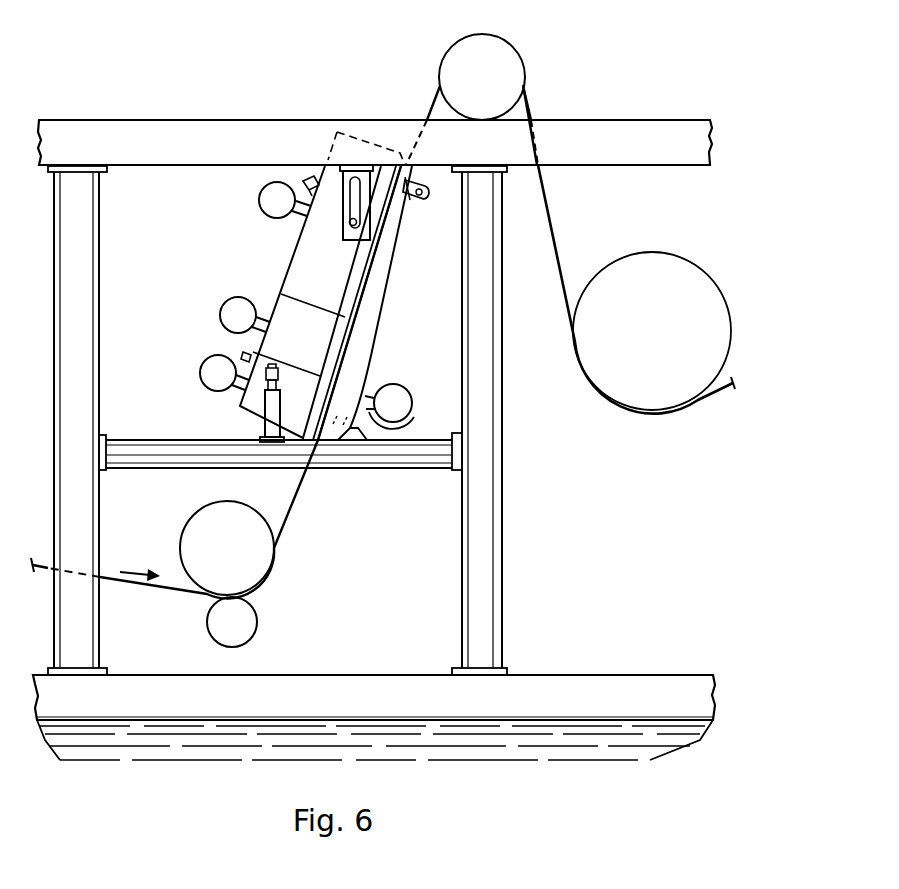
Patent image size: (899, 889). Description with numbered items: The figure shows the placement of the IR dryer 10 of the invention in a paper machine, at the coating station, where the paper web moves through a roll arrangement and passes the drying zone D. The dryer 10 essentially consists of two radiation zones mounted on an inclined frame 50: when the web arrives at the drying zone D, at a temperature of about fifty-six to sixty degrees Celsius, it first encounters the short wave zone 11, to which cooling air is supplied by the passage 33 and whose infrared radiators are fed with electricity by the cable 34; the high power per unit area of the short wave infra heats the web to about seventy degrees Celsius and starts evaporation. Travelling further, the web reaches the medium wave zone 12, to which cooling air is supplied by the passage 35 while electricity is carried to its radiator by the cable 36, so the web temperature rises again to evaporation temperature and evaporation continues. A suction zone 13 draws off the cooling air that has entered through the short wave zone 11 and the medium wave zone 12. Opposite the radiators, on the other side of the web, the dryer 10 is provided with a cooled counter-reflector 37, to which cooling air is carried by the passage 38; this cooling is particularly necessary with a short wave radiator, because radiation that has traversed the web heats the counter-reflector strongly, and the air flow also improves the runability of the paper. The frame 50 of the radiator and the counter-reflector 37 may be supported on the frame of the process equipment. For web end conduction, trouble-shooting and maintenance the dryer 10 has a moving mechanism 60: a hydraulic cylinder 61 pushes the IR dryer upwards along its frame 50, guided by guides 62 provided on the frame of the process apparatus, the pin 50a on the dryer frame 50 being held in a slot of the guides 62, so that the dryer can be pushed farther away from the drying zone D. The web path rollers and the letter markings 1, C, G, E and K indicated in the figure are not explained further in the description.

The IR dryer 10 is at (224, 224).
The cable 36 is at (303, 138).
The passage 35 is at (268, 188).
The cable 34 is at (243, 357).
The passage 33 is at (200, 372).
The passage 38 is at (400, 390).
The frame 50 is at (380, 173).
The pin 50a is at (357, 222).
The short wave zone 11 is at (304, 410).
The medium wave zone 12 is at (367, 267).
The suction zone 13 is at (363, 357).
The counter-reflector 37 is at (388, 318).
The moving mechanism 60 is at (286, 378).
The hydraulic cylinder 61 is at (262, 428).
The guides 62 is at (352, 243).
The frame part 1 is at (253, 396).
The web roller C is at (383, 29).
The lower rollers G is at (382, 534).
The web E is at (180, 597).
The web direction K is at (136, 564).
The drying zone D is at (425, 405).